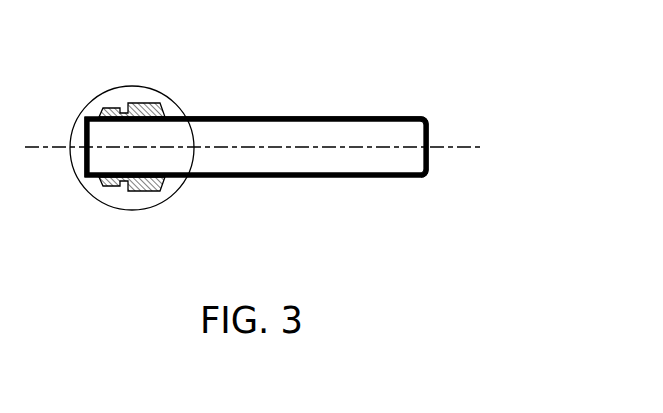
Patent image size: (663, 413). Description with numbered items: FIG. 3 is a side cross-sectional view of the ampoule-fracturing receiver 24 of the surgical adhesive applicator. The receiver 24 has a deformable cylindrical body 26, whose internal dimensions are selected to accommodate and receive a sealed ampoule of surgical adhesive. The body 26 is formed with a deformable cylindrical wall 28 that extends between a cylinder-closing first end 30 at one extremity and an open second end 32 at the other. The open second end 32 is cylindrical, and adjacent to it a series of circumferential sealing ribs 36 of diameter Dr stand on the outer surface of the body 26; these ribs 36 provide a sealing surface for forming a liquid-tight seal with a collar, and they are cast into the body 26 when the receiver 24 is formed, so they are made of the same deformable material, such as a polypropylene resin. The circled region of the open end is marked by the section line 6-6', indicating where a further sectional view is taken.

The receiver 24 is at (256, 156).
The deformable cylindrical body 26 is at (408, 177).
The deformable cylindrical wall 28 is at (290, 117).
The cylinder-closing first end 30 is at (430, 139).
The open second end 32 is at (85, 147).
The circumferential sealing ribs 36 is at (113, 187).
The section line 6-6' is at (132, 123).